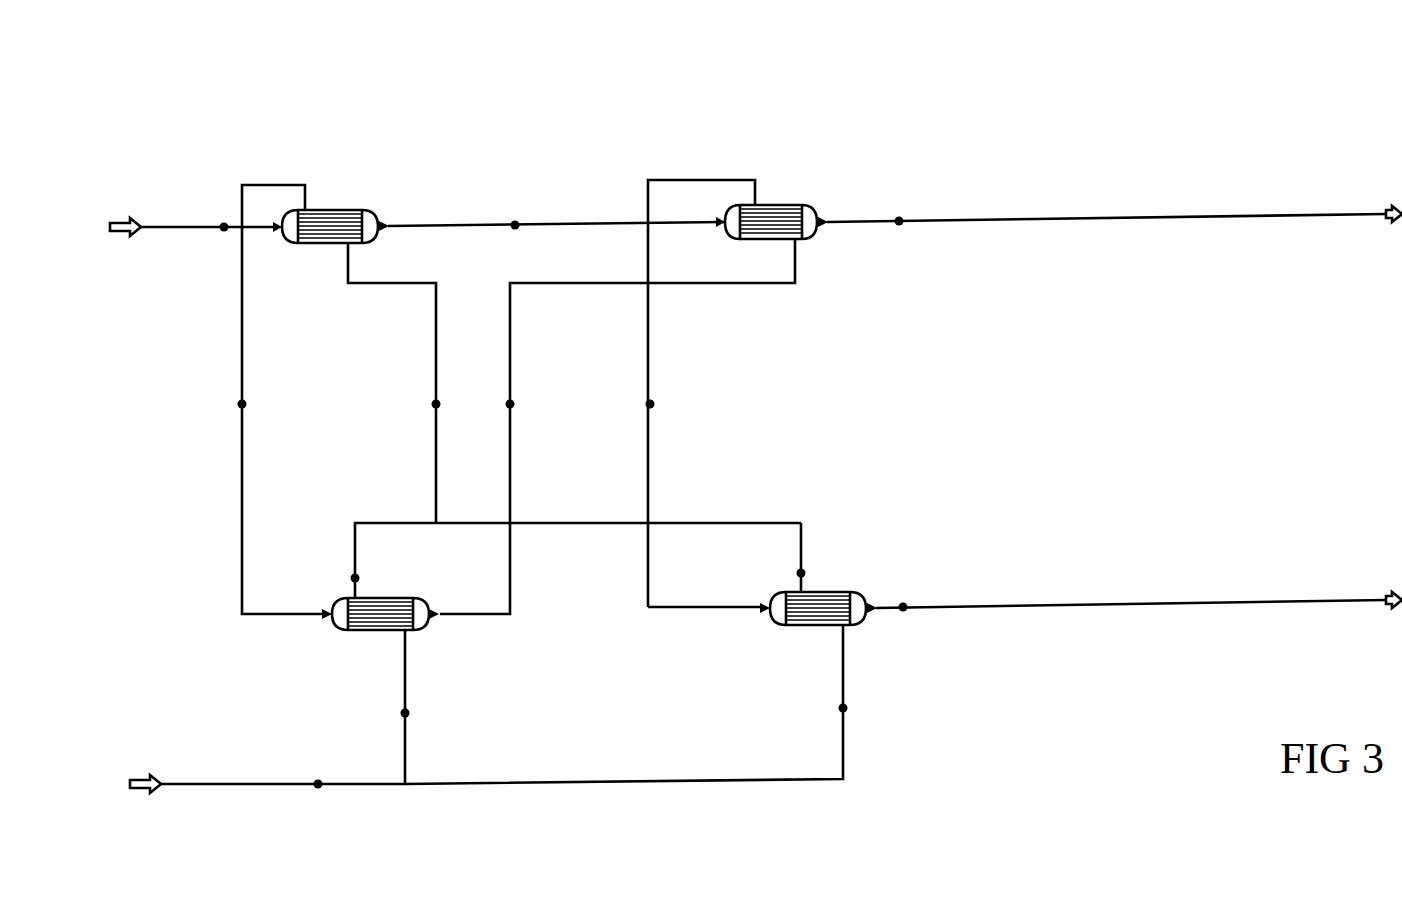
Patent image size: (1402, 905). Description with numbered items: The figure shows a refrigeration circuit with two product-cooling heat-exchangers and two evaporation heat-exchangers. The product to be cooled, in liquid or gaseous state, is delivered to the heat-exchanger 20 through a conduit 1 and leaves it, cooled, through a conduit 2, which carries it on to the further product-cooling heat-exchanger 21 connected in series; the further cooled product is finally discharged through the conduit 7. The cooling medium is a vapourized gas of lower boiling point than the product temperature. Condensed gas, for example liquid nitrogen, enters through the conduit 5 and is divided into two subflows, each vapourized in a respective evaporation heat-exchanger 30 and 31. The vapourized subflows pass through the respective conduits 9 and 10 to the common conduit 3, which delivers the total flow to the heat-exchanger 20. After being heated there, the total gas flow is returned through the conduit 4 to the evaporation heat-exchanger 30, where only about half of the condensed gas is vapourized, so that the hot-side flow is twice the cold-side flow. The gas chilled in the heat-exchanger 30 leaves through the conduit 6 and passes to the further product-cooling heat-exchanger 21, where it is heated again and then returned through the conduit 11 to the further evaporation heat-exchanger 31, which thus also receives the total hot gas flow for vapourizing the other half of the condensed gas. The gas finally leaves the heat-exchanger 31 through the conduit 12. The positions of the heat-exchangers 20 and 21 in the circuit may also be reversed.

The conduit 1 is at (224, 231).
The conduit 2 is at (565, 222).
The conduit 3 is at (436, 348).
The conduit 4 is at (242, 348).
The conduit 5 is at (240, 784).
The conduit 6 is at (510, 557).
The conduit 7 is at (935, 221).
The conduit 9 is at (393, 523).
The conduit 10 is at (801, 557).
The conduit 11 is at (672, 180).
The conduit 12 is at (988, 607).
The heat-exchanger 20 is at (365, 210).
The further product-cooling heat-exchanger 21 is at (794, 205).
The evaporation heat-exchanger 30 is at (405, 598).
The further evaporation heat-exchanger 31 is at (790, 625).